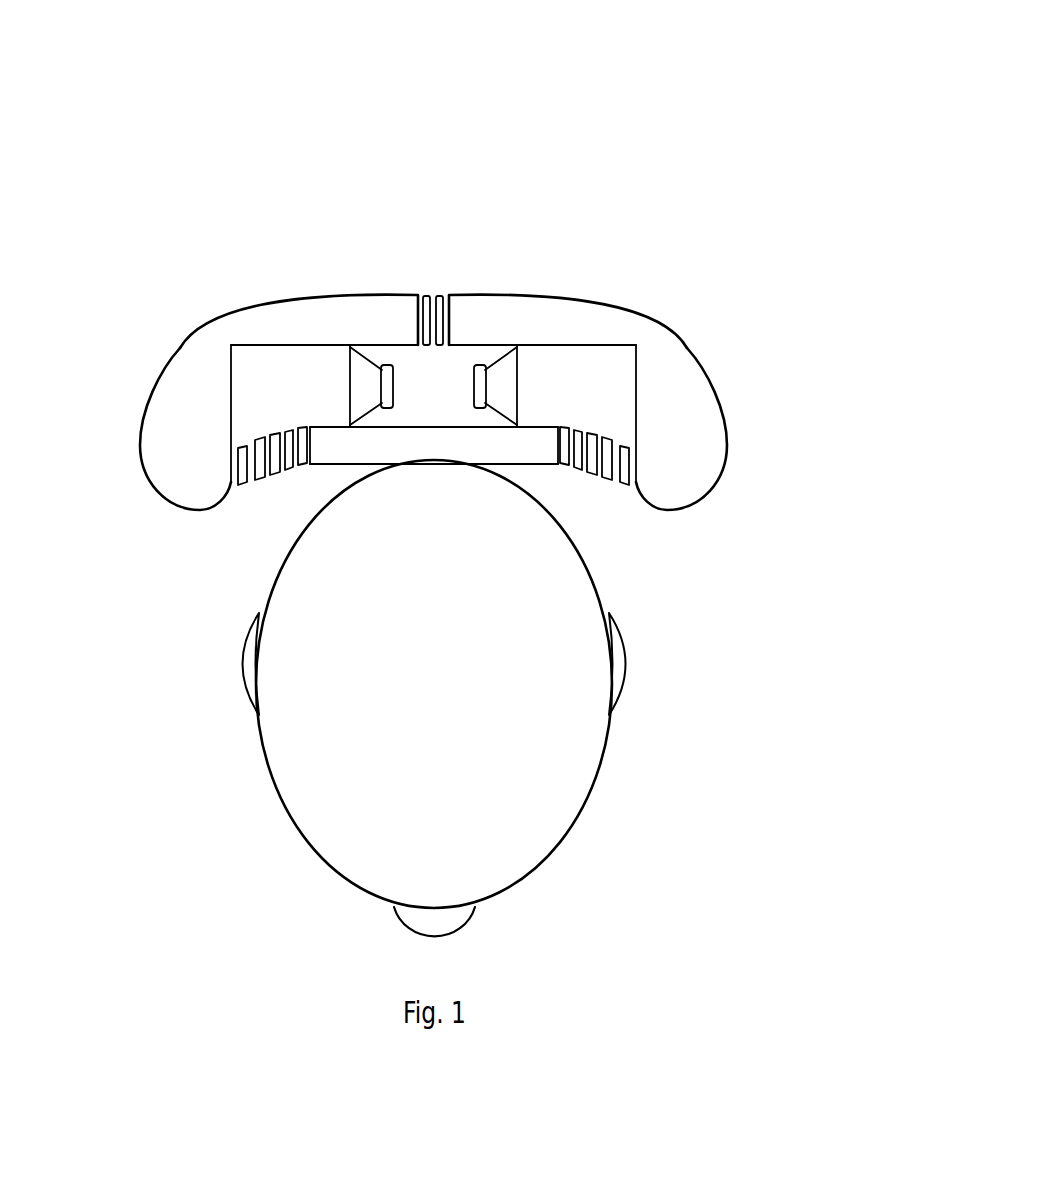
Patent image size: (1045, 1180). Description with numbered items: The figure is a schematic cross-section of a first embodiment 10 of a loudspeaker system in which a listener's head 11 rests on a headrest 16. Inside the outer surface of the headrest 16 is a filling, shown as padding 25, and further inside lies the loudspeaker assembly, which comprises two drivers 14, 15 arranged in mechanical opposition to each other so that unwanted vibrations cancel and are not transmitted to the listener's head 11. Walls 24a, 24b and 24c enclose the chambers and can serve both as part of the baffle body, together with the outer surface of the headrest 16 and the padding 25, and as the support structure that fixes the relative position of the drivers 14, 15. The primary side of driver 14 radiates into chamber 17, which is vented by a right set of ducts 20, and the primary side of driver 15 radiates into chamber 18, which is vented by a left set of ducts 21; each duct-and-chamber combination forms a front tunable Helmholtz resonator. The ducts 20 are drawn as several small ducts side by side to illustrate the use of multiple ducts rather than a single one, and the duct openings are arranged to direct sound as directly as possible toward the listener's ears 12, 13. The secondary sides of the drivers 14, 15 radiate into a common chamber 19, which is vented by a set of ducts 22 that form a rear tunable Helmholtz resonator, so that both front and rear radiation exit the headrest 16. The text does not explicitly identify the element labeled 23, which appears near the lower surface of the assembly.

The example embodiment 10 is at (637, 140).
The listener's head 11 is at (468, 736).
The listener's ear 12 is at (240, 668).
The listener's ear 13 is at (626, 629).
The driver 14 is at (350, 370).
The driver 15 is at (520, 373).
The headrest 16 is at (603, 310).
The chamber 17 is at (275, 388).
The chamber 18 is at (593, 385).
The common chamber 19 is at (426, 378).
The right set of ducts 20 is at (263, 477).
The left set of ducts 21 is at (602, 480).
The set of ducts 22 is at (433, 293).
The bottom surface 23 is at (333, 465).
The wall 24a is at (437, 427).
The wall 24b is at (637, 398).
The wall 24c is at (231, 390).
The padding 25 is at (170, 443).